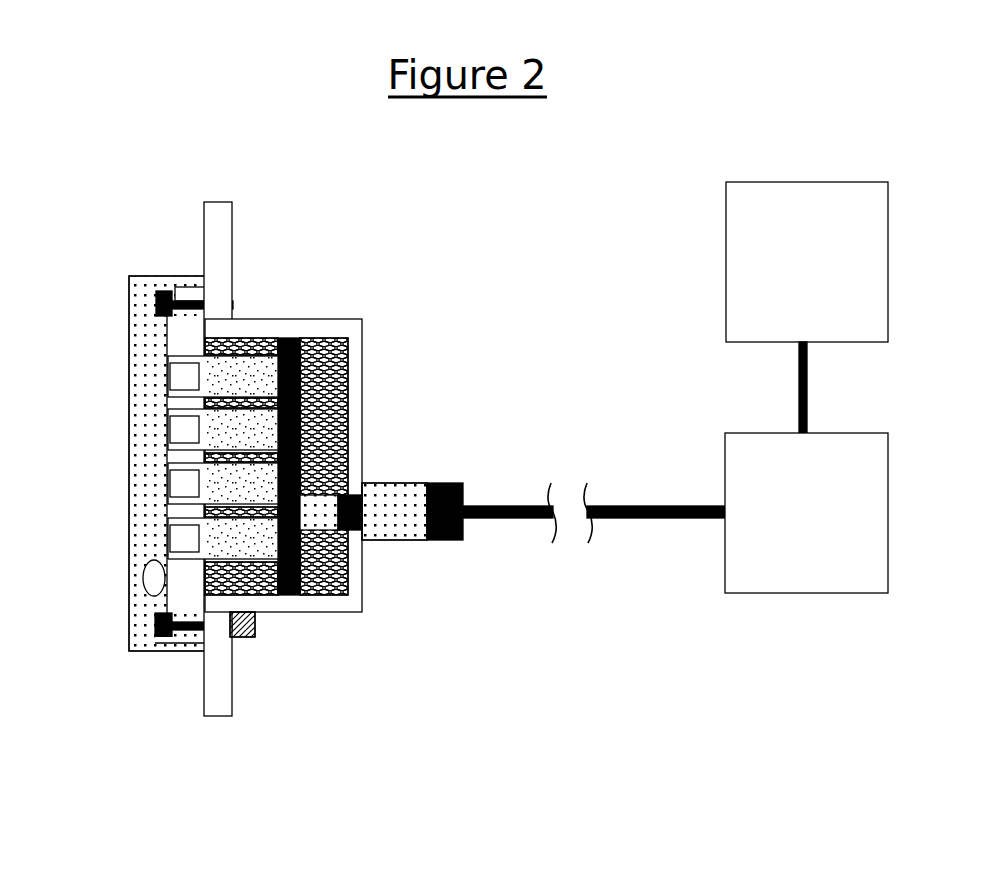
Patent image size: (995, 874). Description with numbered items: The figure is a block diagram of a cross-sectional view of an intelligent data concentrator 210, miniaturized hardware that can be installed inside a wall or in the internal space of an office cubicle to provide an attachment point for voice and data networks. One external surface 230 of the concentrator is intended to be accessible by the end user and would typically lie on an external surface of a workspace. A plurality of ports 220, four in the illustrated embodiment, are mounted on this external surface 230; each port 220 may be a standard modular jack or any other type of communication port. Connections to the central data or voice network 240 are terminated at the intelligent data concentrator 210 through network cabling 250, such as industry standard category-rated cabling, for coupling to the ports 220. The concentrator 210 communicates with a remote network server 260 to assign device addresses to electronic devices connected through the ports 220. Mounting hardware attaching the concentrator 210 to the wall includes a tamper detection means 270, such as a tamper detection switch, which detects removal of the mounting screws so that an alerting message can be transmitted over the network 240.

The intelligent data concentrator 210 is at (287, 319).
The ports 220 is at (167, 423).
The external surface 230 is at (167, 352).
The network 240 is at (806, 513).
The network cabling 250 is at (633, 506).
The network server 260 is at (807, 262).
The tamper detection means 270 is at (248, 638).